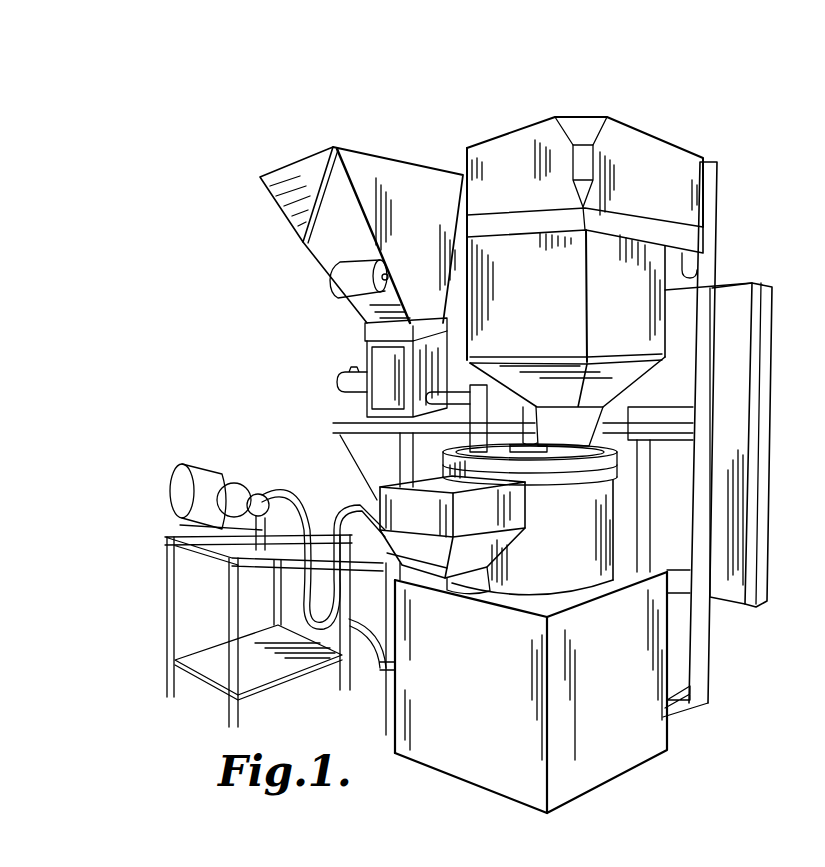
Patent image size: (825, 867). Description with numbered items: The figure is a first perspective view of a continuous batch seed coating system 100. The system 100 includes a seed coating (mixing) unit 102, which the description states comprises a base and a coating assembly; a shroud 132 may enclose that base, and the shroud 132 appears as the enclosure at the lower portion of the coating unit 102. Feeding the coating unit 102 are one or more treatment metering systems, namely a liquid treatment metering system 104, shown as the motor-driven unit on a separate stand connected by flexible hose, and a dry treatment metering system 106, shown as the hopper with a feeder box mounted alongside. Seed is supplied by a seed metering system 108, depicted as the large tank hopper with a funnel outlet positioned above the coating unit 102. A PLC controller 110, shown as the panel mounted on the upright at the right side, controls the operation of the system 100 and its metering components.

The continuous batch seed coating system 100 is at (668, 133).
The seed coating unit 102 is at (628, 778).
The liquid treatment metering system 104 is at (217, 466).
The dry treatment metering system 106 is at (377, 143).
The seed metering system 108 is at (516, 123).
The PLC controller 110 is at (778, 368).
The shroud 132 is at (443, 774).